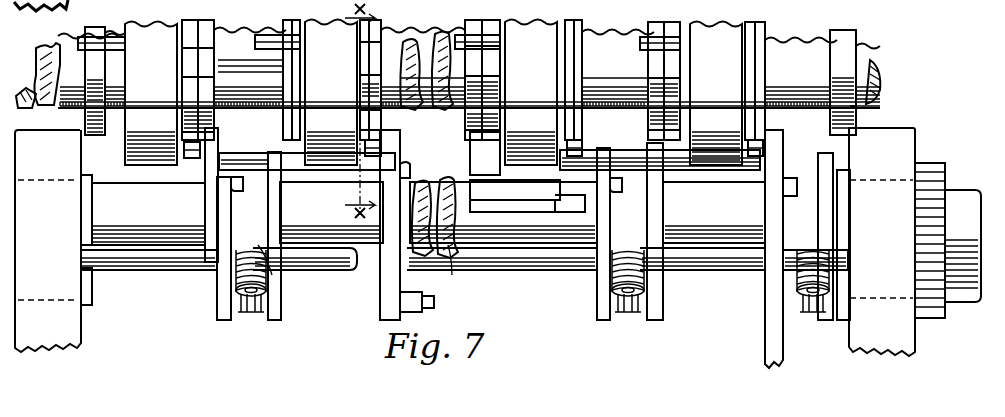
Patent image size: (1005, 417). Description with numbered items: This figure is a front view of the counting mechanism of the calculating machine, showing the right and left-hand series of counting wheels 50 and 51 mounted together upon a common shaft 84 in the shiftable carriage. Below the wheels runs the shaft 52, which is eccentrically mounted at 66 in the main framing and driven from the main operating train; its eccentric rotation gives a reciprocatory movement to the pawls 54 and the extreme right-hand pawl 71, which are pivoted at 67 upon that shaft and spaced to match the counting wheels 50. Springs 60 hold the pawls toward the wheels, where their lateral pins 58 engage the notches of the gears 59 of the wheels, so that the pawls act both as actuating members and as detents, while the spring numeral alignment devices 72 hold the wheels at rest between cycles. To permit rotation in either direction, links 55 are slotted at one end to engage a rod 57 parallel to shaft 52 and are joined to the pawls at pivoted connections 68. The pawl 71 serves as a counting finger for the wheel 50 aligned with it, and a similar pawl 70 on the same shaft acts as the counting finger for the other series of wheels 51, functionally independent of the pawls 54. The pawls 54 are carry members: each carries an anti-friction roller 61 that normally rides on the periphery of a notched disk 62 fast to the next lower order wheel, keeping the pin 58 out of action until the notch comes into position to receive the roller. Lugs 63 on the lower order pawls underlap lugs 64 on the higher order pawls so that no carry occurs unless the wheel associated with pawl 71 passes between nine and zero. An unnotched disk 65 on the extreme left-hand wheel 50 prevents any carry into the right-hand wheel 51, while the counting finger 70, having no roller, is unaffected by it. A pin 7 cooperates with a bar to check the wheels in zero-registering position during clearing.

The pin 7 is at (86, 44).
The counting wheel 50 is at (515, 30).
The counting wheel 51 is at (132, 28).
The shaft 52 is at (110, 186).
The pawl 54 is at (392, 147).
The link 55 is at (790, 18).
The rod 57 is at (522, 270).
The lateral pin 58 is at (192, 158).
The gear 59 is at (205, 26).
The spring 60 is at (640, 4).
The anti-friction roller 61 is at (478, 34).
The notched disk 62 is at (490, 82).
The lug 63 is at (570, 205).
The lug 64 is at (512, 205).
The unnotched disk 65 is at (290, 70).
The eccentric mounting 66 is at (60, 302).
The pivot 67 is at (288, 268).
The pivoted connection 68 is at (240, 192).
The pawl 70 is at (218, 136).
The pawl 71 is at (783, 143).
The spring numeral alignment device 72 is at (22, 96).
The shaft 84 is at (40, 50).